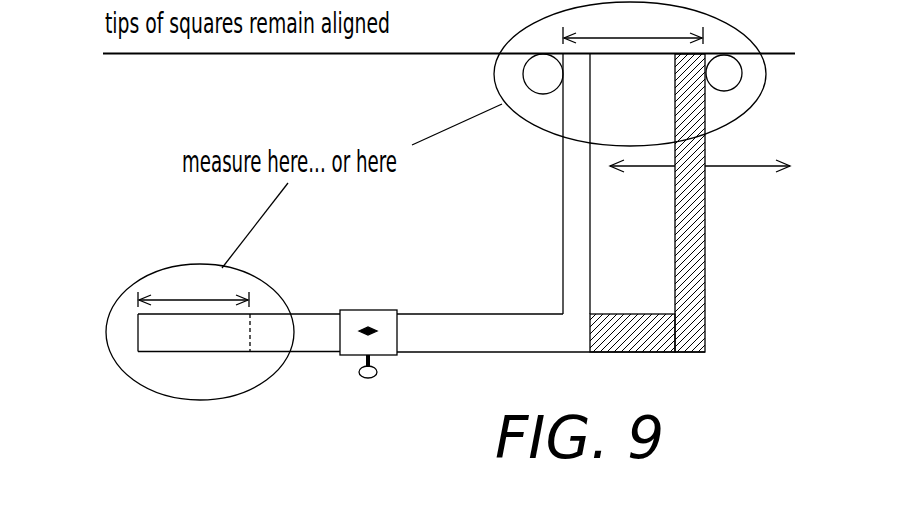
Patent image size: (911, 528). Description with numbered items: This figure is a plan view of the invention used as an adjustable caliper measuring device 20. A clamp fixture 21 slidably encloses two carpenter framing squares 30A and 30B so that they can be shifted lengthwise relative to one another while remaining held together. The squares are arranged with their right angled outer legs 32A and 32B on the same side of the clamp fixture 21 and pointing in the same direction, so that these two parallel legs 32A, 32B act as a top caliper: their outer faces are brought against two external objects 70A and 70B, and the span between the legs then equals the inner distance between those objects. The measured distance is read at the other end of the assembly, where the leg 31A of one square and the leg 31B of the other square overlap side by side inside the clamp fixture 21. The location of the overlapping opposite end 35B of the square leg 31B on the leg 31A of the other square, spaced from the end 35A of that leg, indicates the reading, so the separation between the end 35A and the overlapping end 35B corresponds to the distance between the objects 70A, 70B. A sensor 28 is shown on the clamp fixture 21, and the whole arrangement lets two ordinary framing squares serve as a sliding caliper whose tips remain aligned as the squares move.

The measuring apparatus 20 is at (498, 280).
The clamp fixture 21 is at (368, 310).
The sensor 28 is at (376, 332).
The carpenter framing square 30A is at (560, 255).
The carpenter framing square 30B is at (705, 318).
The leg 31A is at (535, 352).
The carpenter framing square leg 31B is at (655, 352).
The right angled outer leg 32A is at (563, 182).
The right angled outer leg 32B is at (693, 230).
The end 35A is at (138, 329).
The overlapping opposite end 35B is at (250, 337).
The external object 70A is at (523, 74).
The external object 70B is at (743, 72).